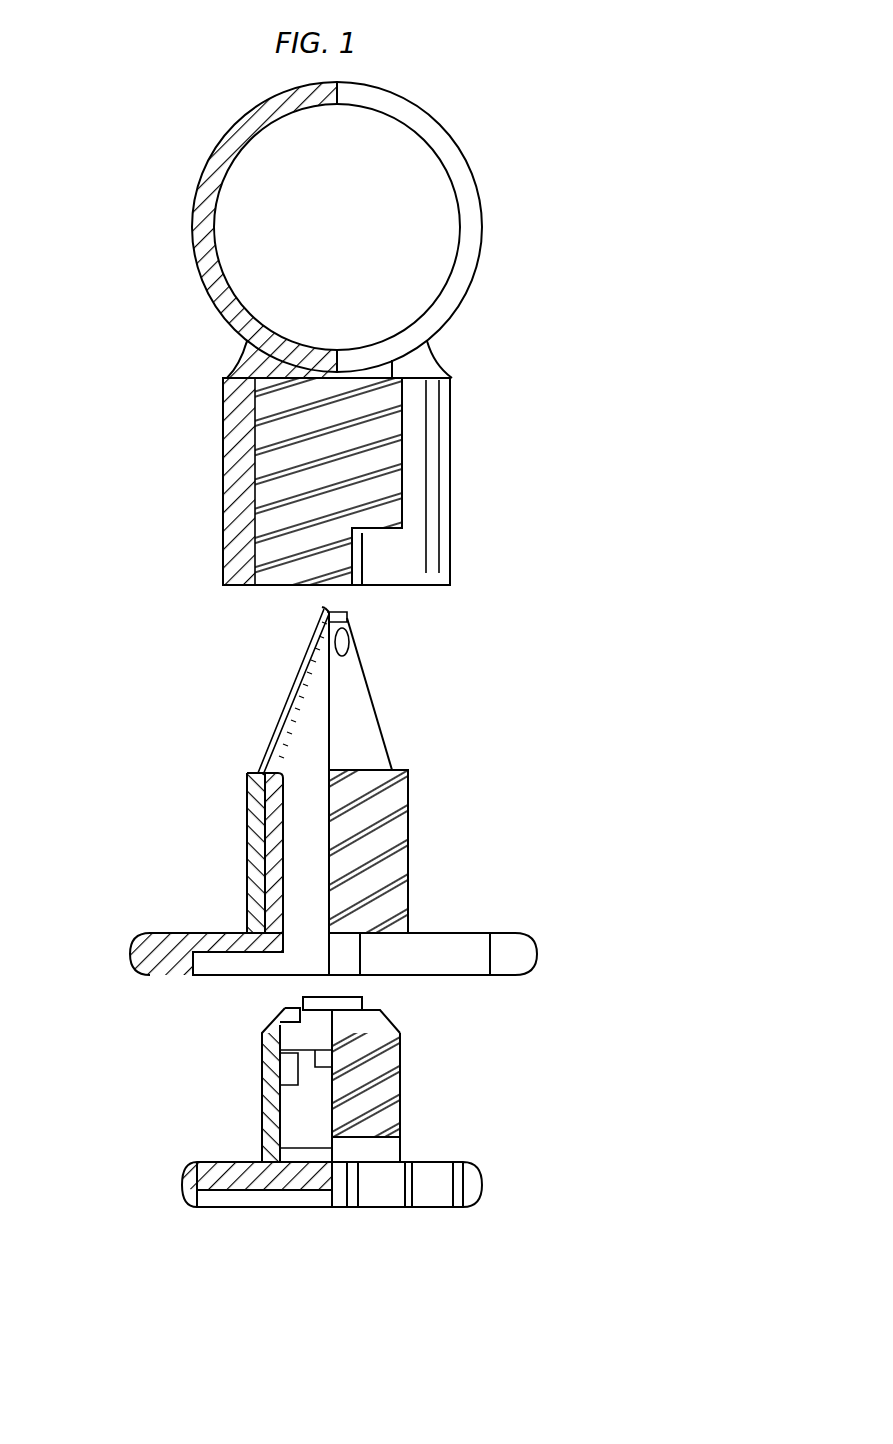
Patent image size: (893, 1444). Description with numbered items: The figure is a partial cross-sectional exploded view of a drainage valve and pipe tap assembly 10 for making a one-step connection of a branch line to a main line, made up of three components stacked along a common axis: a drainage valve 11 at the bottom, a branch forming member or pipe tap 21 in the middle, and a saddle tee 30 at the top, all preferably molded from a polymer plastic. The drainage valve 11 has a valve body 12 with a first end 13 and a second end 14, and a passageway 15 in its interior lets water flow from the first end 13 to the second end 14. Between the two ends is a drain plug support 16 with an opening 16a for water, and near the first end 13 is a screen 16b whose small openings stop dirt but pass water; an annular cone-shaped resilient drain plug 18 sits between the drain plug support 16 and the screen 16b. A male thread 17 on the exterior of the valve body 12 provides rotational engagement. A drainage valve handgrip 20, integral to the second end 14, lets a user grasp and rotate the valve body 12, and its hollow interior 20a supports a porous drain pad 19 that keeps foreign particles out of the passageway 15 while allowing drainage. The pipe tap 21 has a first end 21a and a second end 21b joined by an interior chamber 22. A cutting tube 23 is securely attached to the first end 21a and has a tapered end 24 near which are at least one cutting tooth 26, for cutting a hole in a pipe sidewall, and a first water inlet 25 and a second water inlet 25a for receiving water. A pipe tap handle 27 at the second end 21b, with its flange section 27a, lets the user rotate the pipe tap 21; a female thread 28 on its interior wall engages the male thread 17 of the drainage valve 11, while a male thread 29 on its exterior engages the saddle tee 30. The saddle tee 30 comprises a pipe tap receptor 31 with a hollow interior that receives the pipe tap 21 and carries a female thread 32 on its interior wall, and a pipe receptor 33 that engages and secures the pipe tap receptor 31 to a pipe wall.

The drainage valve and pipe tap assembly 10 is at (97, 505).
The drainage valve 11 is at (548, 1048).
The valve body 12 is at (400, 1128).
The first end 13 is at (385, 1013).
The second end 14 is at (262, 1147).
The passageway 15 is at (298, 1113).
The drain plug support 16 is at (262, 1078).
The opening 16a is at (378, 1087).
The screen 16b is at (303, 1001).
The male thread 17 is at (398, 1097).
The drain plug 18 is at (313, 1030).
The drain pad 19 is at (292, 1182).
The drainage valve handgrip 20 is at (432, 1192).
The hollow interior 20a is at (220, 1200).
The pipe tap 21 is at (540, 637).
The first end 21a is at (250, 773).
The second end 21b is at (247, 915).
The chamber 22 is at (298, 862).
The cutting tube 23 is at (365, 730).
The tapered end 24 is at (349, 642).
The first water inlet 25 is at (335, 607).
The second water inlet 25a is at (306, 651).
The cutting tooth 26 is at (322, 607).
The pipe tap handle 27 is at (470, 938).
The flange section 27a is at (210, 966).
The female thread 28 is at (272, 820).
The male thread 29 is at (385, 843).
The saddle tee 30 is at (540, 182).
The pipe tap receptor 31 is at (437, 500).
The female thread 32 is at (290, 458).
The pipe receptor 33 is at (472, 245).